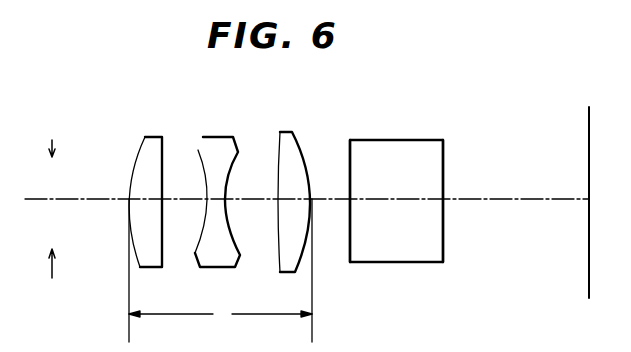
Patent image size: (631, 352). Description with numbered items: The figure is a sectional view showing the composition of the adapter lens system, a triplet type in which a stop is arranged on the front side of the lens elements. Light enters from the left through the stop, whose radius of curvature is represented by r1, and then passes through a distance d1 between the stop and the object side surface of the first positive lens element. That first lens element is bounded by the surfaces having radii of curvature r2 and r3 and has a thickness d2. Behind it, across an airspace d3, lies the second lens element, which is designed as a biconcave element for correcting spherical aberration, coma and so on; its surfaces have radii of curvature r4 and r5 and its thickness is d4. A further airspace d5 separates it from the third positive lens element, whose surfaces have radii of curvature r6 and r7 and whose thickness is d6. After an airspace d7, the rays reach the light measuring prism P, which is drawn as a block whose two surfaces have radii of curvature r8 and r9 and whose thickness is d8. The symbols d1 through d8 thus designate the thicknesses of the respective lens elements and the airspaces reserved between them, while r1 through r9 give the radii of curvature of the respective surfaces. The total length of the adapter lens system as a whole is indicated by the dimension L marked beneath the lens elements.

The radius of curvature of stop r1 is at (52, 137).
The radius of curvature of lens surface r2 is at (137, 150).
The radius of curvature of lens surface r3 is at (157, 143).
The radius of curvature of lens surface r4 is at (198, 153).
The radius of curvature of lens surface r5 is at (233, 153).
The radius of curvature of lens surface r6 is at (278, 153).
The radius of curvature of lens surface r7 is at (299, 140).
The radius of curvature of prism surface r8 is at (348, 153).
The radius of curvature of prism surface r9 is at (445, 147).
The distance between stop and first lens element d1 is at (97, 200).
The thickness of first lens element d2 is at (145, 201).
The airspace between first and second lens elements d3 is at (192, 203).
The thickness of second lens element d4 is at (214, 202).
The airspace between second and third lens elements d5 is at (253, 203).
The thickness of third lens element d6 is at (297, 202).
The airspace between third lens element and prism d7 is at (335, 203).
The thickness of prism d8 is at (382, 203).
The prism P is at (393, 150).
The total length of adapter lens system L is at (220, 315).